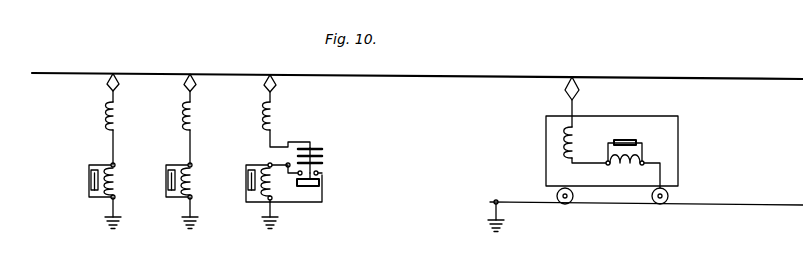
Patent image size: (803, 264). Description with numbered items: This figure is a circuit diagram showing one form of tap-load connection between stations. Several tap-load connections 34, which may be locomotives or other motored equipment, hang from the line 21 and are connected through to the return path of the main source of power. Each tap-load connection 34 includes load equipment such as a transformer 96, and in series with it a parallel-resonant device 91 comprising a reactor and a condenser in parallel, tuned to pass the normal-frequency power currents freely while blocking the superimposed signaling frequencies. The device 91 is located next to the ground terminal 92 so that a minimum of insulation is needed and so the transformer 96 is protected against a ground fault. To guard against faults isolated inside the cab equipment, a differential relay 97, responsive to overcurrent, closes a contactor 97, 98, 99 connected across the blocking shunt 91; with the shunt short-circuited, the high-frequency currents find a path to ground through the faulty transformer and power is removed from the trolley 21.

The line 21 is at (132, 73).
The tap-load connection 34 is at (95, 125).
The transformer 96 is at (116, 123).
The parallel-resonant device 91 is at (106, 172).
The ground terminal 92 is at (262, 222).
The contactor 98 is at (314, 147).
The differential relay 97 is at (318, 158).
The contactor 99 is at (320, 174).